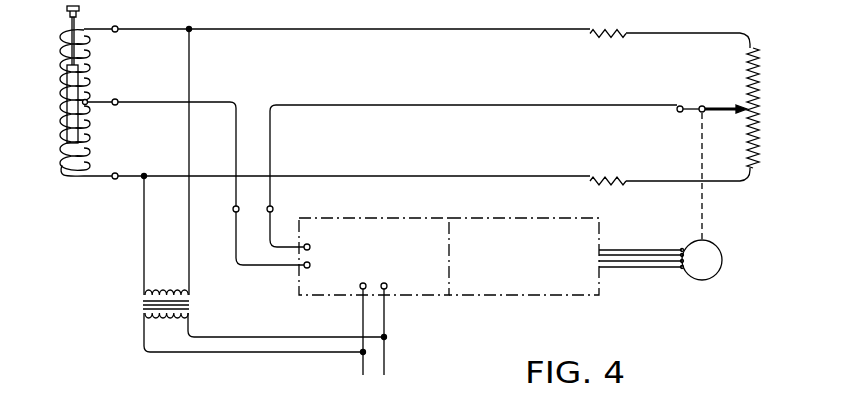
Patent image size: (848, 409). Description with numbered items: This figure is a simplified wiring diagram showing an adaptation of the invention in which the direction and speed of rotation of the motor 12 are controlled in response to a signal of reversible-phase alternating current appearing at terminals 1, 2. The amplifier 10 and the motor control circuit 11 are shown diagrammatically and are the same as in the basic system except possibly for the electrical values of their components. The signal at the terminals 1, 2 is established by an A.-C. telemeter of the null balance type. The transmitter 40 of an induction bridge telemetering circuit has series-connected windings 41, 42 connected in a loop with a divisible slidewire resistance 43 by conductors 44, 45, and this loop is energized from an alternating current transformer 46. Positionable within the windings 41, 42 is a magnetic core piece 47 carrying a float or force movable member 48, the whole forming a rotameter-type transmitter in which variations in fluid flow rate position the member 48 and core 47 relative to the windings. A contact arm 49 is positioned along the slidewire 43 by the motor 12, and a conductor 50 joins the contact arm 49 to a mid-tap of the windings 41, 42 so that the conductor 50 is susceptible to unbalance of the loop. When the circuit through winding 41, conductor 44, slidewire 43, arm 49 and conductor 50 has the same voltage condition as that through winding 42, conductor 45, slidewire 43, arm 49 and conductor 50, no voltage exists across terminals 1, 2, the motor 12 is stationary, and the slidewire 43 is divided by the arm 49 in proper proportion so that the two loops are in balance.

The transmitter 40 is at (50, 104).
The winding 41 is at (84, 60).
The winding 42 is at (80, 135).
The slidewire resistance 43 is at (745, 78).
The conductor 44 is at (400, 33).
The conductor 45 is at (393, 179).
The alternating current transformer 46 is at (133, 313).
The magnetic core piece 47 is at (84, 97).
The float or force movable member 48 is at (66, 9).
The contact arm 49 is at (695, 108).
The conductor 50 is at (344, 104).
The terminal 1 is at (232, 209).
The terminal 2 is at (274, 209).
The amplifier 10 is at (433, 263).
The motor control circuit 11 is at (581, 270).
The motor 12 is at (722, 250).